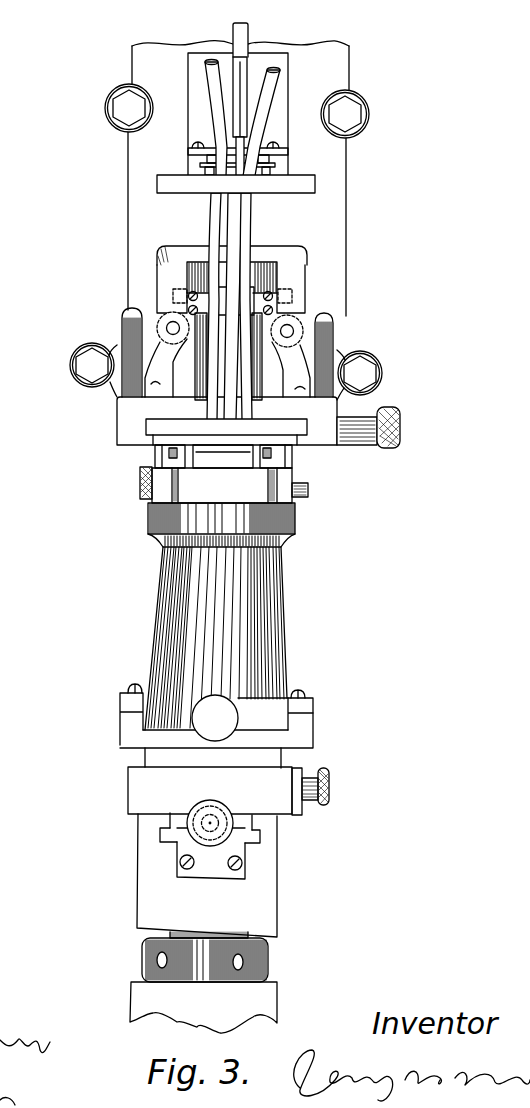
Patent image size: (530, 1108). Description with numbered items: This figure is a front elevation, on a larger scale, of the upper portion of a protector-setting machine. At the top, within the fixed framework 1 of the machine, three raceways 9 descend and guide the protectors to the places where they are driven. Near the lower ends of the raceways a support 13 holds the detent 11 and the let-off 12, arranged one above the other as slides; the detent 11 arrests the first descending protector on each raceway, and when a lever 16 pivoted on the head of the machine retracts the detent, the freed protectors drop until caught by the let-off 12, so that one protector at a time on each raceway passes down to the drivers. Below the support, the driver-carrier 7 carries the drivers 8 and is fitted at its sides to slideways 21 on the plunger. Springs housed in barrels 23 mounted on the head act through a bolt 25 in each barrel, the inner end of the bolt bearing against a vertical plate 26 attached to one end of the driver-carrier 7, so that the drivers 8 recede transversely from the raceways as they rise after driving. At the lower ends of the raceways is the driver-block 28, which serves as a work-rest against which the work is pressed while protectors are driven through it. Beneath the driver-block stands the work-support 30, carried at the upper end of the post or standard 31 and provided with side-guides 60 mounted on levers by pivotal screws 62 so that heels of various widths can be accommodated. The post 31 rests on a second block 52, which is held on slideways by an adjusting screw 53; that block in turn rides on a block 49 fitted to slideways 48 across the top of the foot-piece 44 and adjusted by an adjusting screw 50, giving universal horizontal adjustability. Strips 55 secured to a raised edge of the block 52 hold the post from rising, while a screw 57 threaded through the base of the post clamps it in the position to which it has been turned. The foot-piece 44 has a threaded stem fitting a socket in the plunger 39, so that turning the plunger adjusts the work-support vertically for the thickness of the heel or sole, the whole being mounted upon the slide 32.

The fixed framework 1 is at (347, 222).
The driver-carrier 7 is at (217, 300).
The drivers 8 is at (193, 389).
The raceways 9 is at (204, 77).
The detent 11 is at (268, 159).
The let-off 12 is at (265, 175).
The support 13 is at (189, 190).
The lever 16 is at (253, 32).
The slideways 21 is at (174, 290).
The barrels 23 is at (162, 327).
The bolt 25 is at (171, 324).
The vertical plate 26 is at (173, 270).
The driver-block 28 is at (274, 436).
The work-support 30 is at (201, 488).
The post or standard 31 is at (158, 602).
The slide 32 is at (282, 1000).
The plunger 39 is at (141, 955).
The foot-piece 44 is at (280, 907).
The slideways 48 is at (158, 834).
The block 49 is at (127, 787).
The adjusting screw 50 is at (190, 842).
The second block 52 is at (315, 748).
The adjusting screw 53 is at (331, 790).
The strips 55 is at (137, 702).
The screw 57 is at (208, 727).
The side-guides 60 is at (156, 458).
The pivotal screws 62 is at (140, 484).